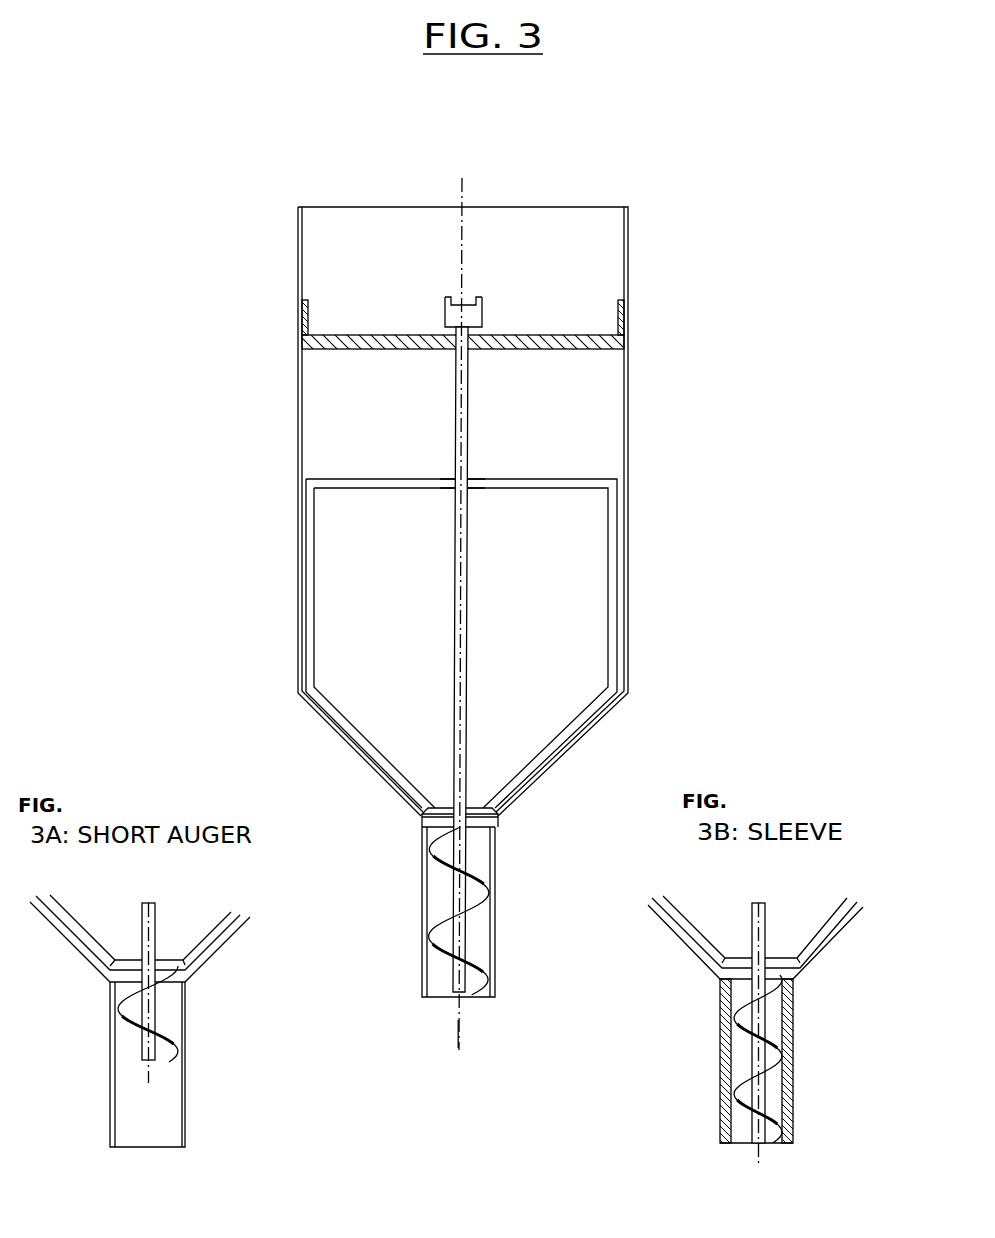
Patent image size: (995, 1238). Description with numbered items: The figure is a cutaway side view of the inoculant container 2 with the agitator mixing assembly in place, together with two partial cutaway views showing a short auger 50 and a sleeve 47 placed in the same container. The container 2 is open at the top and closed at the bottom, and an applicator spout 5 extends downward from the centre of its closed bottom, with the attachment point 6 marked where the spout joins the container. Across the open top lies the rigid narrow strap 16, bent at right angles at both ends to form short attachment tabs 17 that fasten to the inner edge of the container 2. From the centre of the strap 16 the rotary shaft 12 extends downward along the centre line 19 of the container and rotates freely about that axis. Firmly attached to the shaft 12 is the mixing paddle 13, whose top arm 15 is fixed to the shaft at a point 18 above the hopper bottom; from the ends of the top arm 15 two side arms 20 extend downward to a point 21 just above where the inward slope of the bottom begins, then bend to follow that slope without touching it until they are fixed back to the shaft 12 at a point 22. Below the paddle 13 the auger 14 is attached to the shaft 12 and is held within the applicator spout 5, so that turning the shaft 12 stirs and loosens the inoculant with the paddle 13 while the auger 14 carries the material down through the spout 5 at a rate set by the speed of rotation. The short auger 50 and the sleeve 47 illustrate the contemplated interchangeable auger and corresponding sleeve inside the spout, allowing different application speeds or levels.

In FIG. 3, the inoculant container 2 is at (298, 225).
In FIG. 3, the rigid narrow strap 16 is at (330, 333).
In FIG. 3, the short attachment tabs 17 is at (298, 317).
In FIG. 3, the centre line 19 is at (467, 187).
In FIG. 3, the mixing paddle 13 is at (415, 479).
In FIG. 3, the top arm 15 is at (568, 476).
In FIG. 3, the attachment point of top arm 18 is at (470, 490).
In FIG. 3, the side arms 20 is at (313, 588).
In FIG. 3, the rotary shaft 12 is at (455, 661).
In FIG. 3, the fixing point of side arms 22 is at (467, 810).
In FIG. 3, the bend point of side arms 21 is at (422, 830).
In FIG. 3, the attachment point 6 is at (498, 818).
In FIG. 3, the auger 14 is at (440, 942).
In FIG. 3, the applicator spout 5 is at (493, 972).
In FIG. 3B, the short auger 50 is at (760, 984).
In FIG. 3B, the sleeve 47 is at (728, 1146).